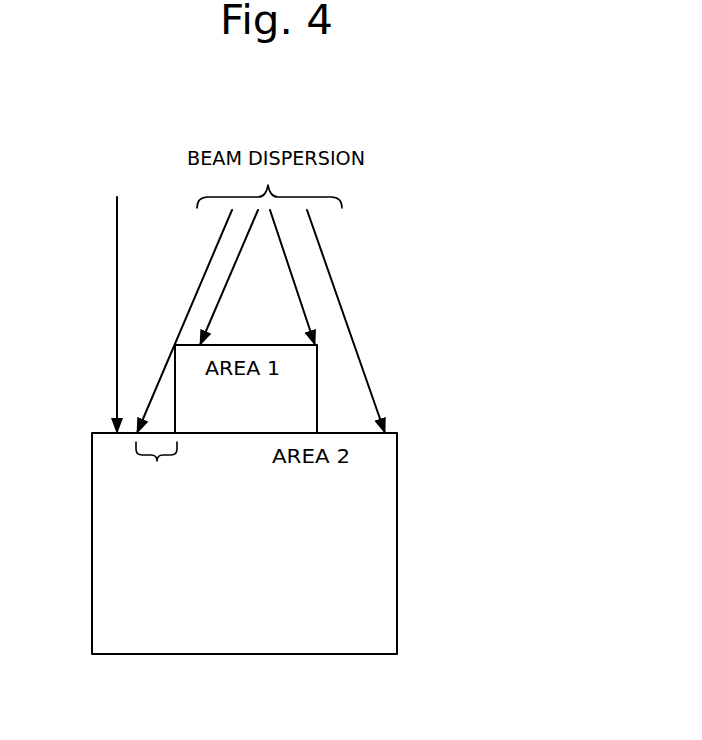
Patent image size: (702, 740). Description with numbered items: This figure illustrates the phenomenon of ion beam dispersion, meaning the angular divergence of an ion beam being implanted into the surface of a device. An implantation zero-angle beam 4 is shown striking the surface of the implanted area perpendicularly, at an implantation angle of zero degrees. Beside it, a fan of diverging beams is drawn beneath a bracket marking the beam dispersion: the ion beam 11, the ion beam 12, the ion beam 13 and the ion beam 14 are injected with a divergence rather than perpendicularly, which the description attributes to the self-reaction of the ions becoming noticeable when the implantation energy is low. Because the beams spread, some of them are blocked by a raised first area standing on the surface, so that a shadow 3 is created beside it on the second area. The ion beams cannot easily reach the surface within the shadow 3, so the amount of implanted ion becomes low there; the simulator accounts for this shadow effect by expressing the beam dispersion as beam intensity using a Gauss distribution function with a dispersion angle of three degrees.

The implantation zero-angle beam 4 is at (116, 197).
The ion beam 14 is at (222, 233).
The ion beam 13 is at (233, 268).
The ion beam 12 is at (305, 312).
The ion beam 11 is at (368, 385).
The shadow 3 is at (157, 470).